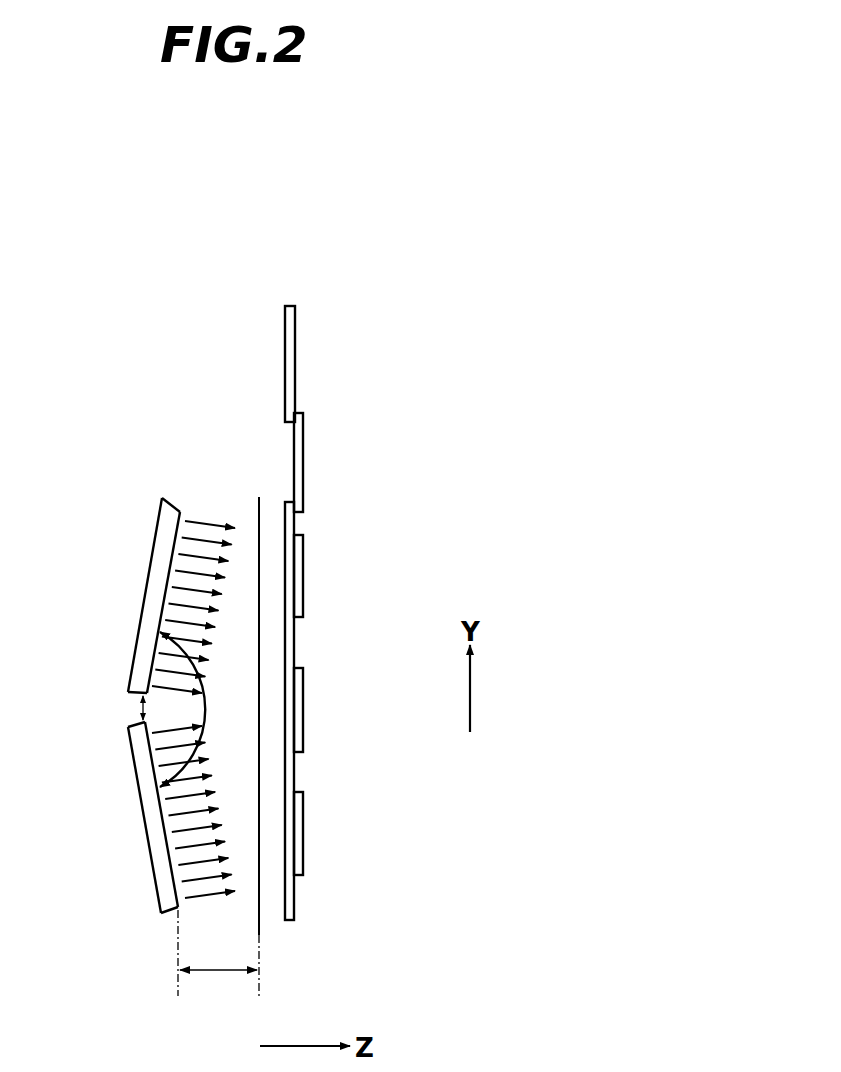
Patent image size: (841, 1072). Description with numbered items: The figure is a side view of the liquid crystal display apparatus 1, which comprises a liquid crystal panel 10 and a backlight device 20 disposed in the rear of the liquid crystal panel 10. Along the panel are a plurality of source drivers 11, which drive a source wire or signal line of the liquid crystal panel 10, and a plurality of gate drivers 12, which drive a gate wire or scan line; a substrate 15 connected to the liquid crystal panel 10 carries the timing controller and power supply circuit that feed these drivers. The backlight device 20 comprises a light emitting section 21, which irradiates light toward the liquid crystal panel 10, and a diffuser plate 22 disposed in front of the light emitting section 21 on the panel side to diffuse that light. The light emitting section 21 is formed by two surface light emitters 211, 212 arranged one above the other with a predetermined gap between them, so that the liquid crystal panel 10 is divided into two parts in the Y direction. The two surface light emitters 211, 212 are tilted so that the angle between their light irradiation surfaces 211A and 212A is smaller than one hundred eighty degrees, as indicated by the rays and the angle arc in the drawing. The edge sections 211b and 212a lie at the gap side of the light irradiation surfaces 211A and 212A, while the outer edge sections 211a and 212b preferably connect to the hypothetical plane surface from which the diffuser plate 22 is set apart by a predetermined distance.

The liquid crystal display apparatus 1 is at (317, 260).
The liquid crystal panel 10 is at (294, 907).
The source driver 11 is at (304, 462).
The gate driver 12 is at (304, 580).
The substrate 15 is at (296, 333).
The backlight device 20 is at (248, 427).
The light emitting section 21 is at (170, 498).
The diffuser plate 22 is at (258, 497).
The surface light emitter 211 is at (145, 622).
The edge section 211a is at (161, 498).
The light irradiation surface 211A is at (180, 512).
The edge section 211b is at (140, 692).
The surface light emitter 212 is at (150, 818).
The edge section 212a is at (140, 725).
The light irradiation surface 212A is at (178, 904).
The edge section 212b is at (172, 912).